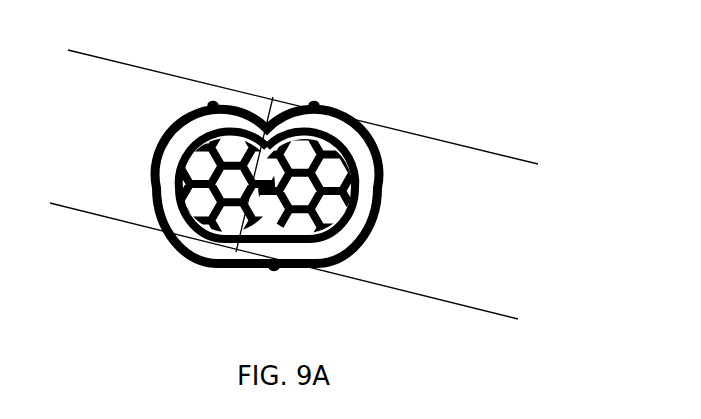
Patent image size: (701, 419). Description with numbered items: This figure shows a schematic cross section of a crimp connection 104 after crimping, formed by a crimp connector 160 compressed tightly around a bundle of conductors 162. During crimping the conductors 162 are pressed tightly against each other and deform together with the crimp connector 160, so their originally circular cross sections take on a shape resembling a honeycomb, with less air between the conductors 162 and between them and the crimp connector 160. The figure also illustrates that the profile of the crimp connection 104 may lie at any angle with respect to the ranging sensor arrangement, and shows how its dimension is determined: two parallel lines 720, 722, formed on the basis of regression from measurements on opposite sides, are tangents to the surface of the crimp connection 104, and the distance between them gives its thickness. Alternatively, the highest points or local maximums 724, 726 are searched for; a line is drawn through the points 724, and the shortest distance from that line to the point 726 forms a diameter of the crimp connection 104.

The crimp connection 104 is at (226, 186).
The crimp connector 160 is at (153, 166).
The conductors 162 is at (325, 154).
The parallel line 720 is at (483, 151).
The parallel line 722 is at (455, 301).
The local maximums 724 is at (213, 104).
The local maximum 726 is at (274, 266).